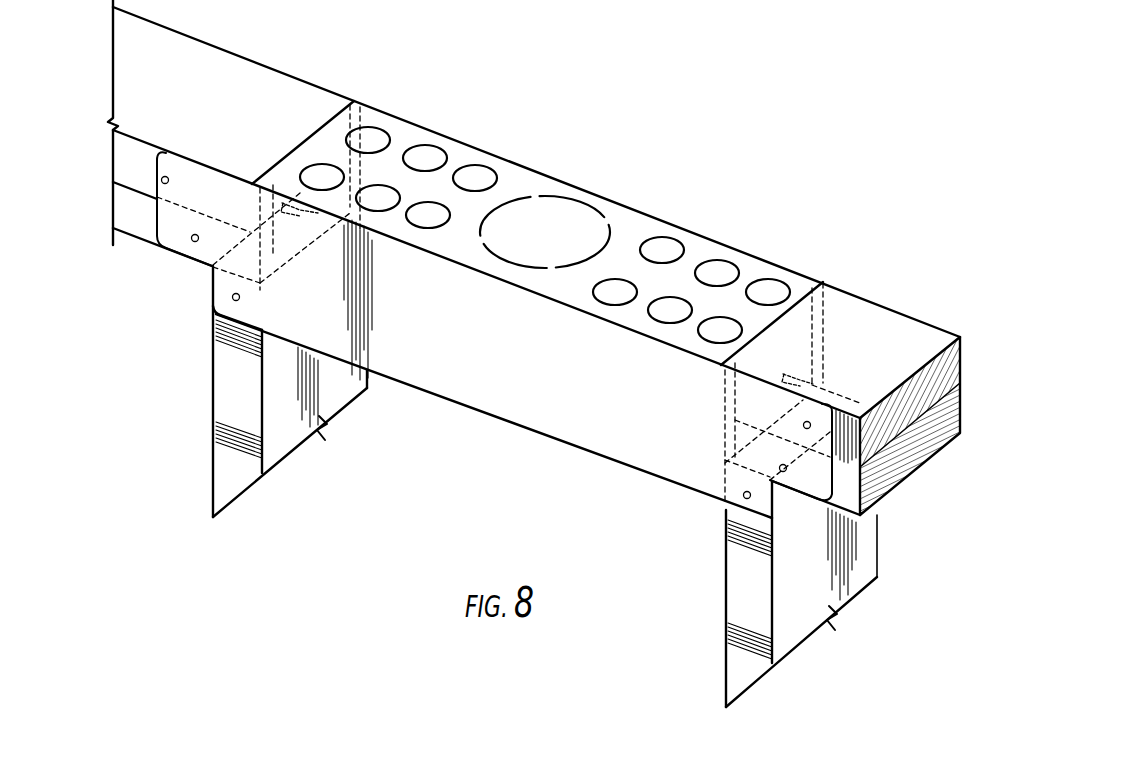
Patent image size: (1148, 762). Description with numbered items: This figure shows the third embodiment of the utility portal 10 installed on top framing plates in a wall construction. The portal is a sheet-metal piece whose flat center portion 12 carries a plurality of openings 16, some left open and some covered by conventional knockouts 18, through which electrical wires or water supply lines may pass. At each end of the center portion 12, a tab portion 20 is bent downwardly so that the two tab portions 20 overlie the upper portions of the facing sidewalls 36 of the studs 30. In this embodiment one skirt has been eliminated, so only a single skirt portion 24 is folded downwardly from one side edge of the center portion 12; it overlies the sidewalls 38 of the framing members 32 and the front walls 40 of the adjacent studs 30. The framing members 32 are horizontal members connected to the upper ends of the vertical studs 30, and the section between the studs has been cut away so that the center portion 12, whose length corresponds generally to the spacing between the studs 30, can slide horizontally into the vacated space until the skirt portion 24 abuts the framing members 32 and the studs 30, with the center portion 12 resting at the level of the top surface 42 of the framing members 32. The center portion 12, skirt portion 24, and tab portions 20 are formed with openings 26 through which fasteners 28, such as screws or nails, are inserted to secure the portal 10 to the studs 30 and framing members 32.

The utility portal 10 is at (704, 173).
The center portion 12 is at (544, 190).
The openings 16 is at (492, 169).
The knockouts 18 is at (440, 149).
The tab portions 20 is at (360, 125).
The skirt portion 24 is at (552, 422).
The openings 26 is at (195, 242).
The fasteners 28 is at (288, 197).
The studs 30 is at (212, 452).
The top framing members 32 is at (960, 384).
The sidewalls of the studs 36 is at (343, 398).
The sidewalls of the framing members 38 is at (222, 45).
The front and back walls of the studs 40 is at (317, 213).
The top surface of the framing members 42 is at (188, 68).